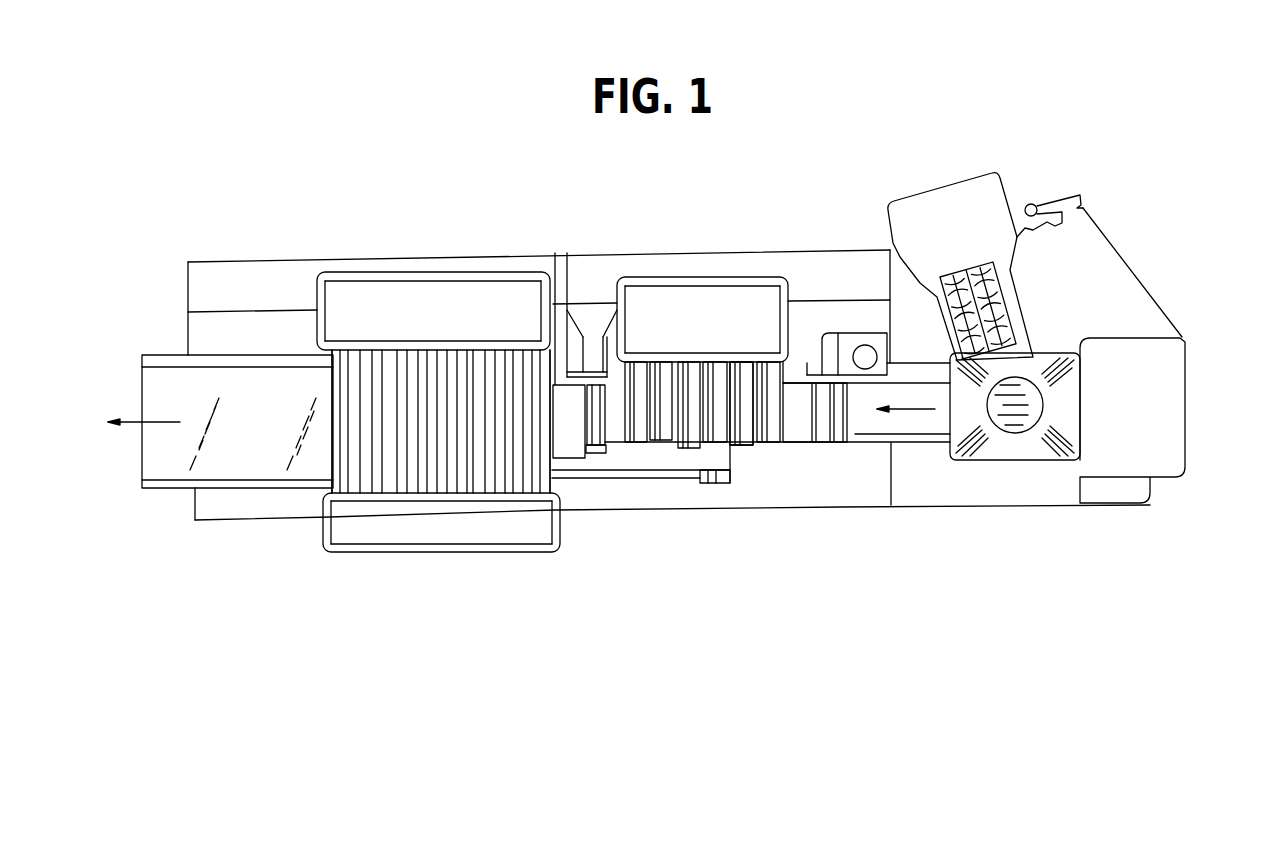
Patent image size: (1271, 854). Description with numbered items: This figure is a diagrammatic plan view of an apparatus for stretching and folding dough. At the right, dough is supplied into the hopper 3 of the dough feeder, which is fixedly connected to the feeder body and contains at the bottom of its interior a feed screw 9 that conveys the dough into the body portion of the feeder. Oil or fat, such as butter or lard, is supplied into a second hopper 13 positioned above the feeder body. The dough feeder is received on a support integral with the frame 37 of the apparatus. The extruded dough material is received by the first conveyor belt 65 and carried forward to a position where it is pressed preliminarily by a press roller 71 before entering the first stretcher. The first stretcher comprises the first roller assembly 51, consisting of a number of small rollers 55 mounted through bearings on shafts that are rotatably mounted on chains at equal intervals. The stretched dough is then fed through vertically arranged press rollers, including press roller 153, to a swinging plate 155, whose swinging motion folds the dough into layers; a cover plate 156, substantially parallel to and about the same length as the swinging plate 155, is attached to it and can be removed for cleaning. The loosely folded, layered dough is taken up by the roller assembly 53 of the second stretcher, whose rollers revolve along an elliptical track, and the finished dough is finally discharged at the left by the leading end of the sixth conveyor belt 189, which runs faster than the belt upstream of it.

The hopper 3 is at (887, 218).
The feed screw 9 is at (995, 307).
The hopper 13 is at (1012, 447).
The frame 37 is at (1160, 396).
The first roller assembly 51 is at (675, 278).
The roller assembly 53 is at (452, 268).
The small rollers 55 is at (333, 485).
The first conveyor belt 65 is at (913, 423).
The press roller 71 is at (822, 432).
The press roller 153 is at (607, 433).
The swinging plate 155 is at (585, 455).
The cover plate 156 is at (567, 455).
The sixth conveyor belt 189 is at (162, 470).